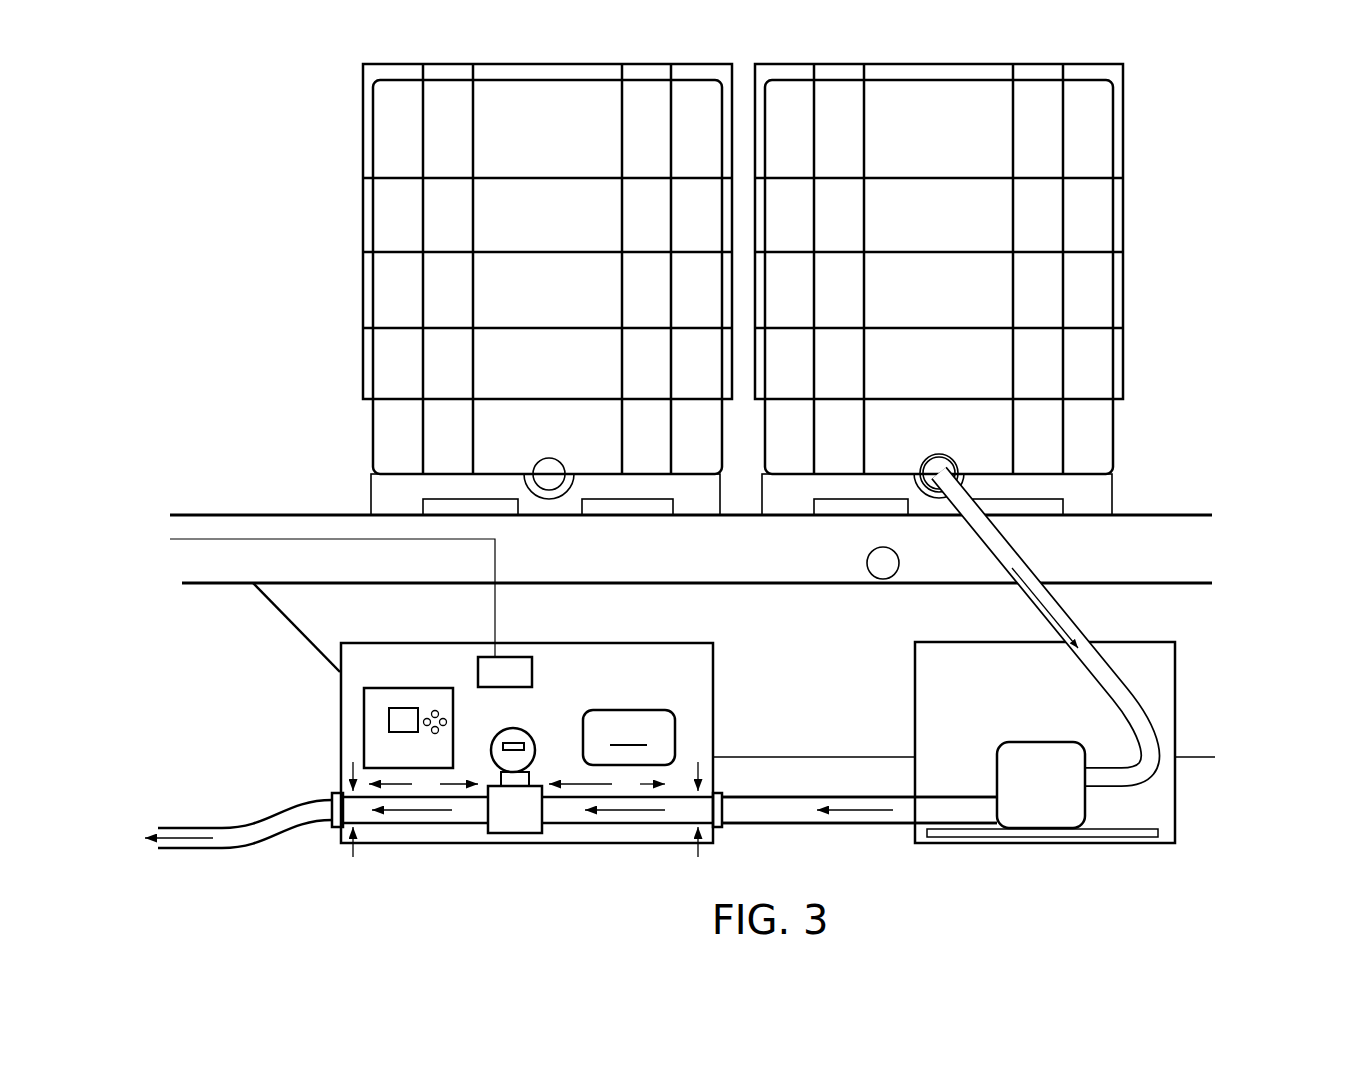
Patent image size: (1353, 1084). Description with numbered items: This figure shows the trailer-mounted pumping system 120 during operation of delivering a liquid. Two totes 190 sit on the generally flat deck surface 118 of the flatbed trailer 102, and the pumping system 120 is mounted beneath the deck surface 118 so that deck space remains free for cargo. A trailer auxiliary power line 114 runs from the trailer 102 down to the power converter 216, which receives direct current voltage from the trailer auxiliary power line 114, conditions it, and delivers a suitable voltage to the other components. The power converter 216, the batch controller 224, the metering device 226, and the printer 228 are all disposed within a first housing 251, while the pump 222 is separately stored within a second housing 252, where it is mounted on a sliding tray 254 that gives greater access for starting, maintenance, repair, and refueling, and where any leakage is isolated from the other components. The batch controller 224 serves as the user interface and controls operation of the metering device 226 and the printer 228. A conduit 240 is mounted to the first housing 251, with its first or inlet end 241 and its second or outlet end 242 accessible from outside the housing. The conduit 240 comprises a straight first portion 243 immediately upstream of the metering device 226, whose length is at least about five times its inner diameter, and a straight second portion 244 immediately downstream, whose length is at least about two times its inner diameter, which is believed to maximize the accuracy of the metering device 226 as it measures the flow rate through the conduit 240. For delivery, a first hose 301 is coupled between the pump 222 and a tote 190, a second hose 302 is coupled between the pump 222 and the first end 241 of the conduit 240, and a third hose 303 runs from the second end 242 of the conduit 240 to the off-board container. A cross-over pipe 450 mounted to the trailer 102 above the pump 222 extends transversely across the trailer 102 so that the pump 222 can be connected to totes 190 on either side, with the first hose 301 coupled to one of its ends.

The totes 190 is at (957, 134).
The trailer 102 is at (200, 515).
The trailer auxiliary power line 114 is at (265, 539).
The deck surface 118 is at (1180, 515).
The pumping system 120 is at (1228, 634).
The power converter 216 is at (515, 668).
The pump 222 is at (1005, 748).
The batch controller 224 is at (368, 729).
The metering device 226 is at (530, 740).
The printer 228 is at (675, 740).
The conduit 240 is at (468, 828).
The first end 241 is at (732, 832).
The second end 242 is at (325, 835).
The first portion 243 is at (658, 828).
The second portion 244 is at (425, 825).
The housing 251 is at (715, 648).
The housing 252 is at (1177, 695).
The sliding tray 254 is at (1127, 838).
The first hose or conduit 301 is at (1075, 627).
The second hose or conduit 302 is at (890, 825).
The third hose or conduit 303 is at (232, 823).
The cross-over pipe 450 is at (880, 578).